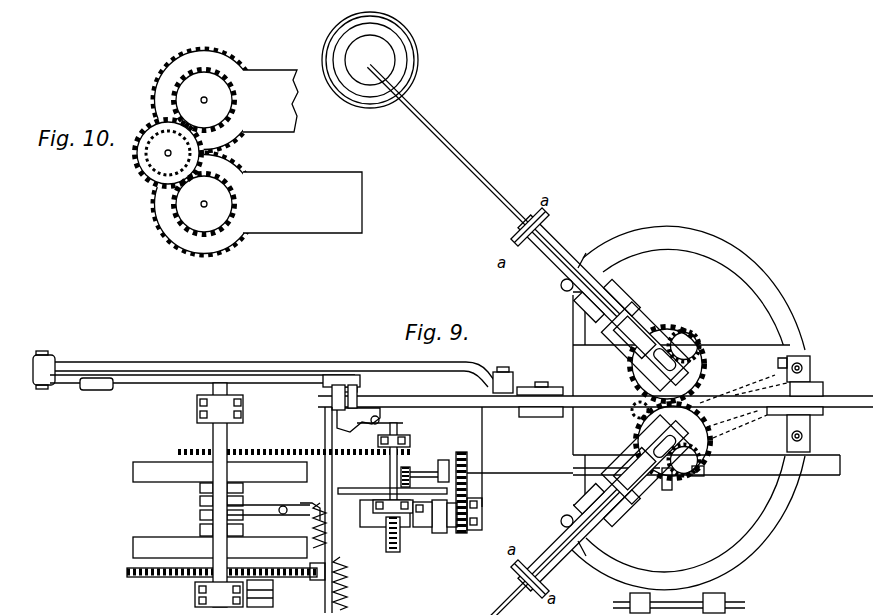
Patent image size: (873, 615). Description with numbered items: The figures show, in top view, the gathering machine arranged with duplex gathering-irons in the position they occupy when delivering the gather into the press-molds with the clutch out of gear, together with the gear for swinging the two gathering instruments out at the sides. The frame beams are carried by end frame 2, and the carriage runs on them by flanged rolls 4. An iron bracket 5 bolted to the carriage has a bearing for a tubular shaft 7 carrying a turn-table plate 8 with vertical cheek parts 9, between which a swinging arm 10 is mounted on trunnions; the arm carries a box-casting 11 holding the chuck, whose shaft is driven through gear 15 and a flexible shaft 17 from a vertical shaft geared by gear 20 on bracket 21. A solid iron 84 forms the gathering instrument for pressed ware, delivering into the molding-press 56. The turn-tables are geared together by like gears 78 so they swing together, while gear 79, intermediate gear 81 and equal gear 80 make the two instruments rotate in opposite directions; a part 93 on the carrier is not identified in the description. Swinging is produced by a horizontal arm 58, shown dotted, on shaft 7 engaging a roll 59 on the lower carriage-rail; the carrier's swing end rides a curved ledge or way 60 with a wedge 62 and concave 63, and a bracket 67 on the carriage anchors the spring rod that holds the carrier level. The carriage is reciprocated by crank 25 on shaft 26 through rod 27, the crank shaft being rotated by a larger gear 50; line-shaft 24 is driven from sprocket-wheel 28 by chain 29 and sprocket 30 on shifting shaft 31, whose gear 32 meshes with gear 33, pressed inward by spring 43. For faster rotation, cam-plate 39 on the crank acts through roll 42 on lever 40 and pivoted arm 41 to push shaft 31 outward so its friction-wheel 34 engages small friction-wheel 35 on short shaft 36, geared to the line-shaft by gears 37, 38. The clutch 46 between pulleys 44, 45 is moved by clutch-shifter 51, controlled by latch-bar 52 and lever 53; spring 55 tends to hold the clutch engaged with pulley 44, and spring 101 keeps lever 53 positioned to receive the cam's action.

In FIG. 9, the end frame 2 is at (210, 409).
In FIG. 9, the flanged rolls 4 is at (532, 386).
In FIG. 9, the iron bracket 5 is at (706, 398).
In FIG. 9, the tubular shaft 7 is at (603, 391).
In FIG. 10, the turn-table plate 8 is at (302, 151).
In FIG. 9, the turn-table plate 8 is at (708, 344).
In FIG. 9, the vertical cheek parts 9 is at (636, 318).
In FIG. 9, the arm 10 is at (565, 244).
In FIG. 9, the box-casting 11 is at (650, 325).
In FIG. 9, the gear 15 is at (692, 498).
In FIG. 9, the flexible shaft 17 is at (706, 485).
In FIG. 9, the gear 20 is at (667, 492).
In FIG. 9, the bracket 21 is at (704, 478).
In FIG. 9, the line-shaft 24 is at (535, 473).
In FIG. 9, the crank cam-lever 25 is at (252, 374).
In FIG. 9, the shaft 26 is at (213, 470).
In FIG. 9, the rod 27 is at (148, 362).
In FIG. 9, the sprocket-wheel 28 is at (195, 442).
In FIG. 9, the chain 29 is at (262, 449).
In FIG. 9, the sprocket 30 is at (412, 458).
In FIG. 9, the shifting shaft 31 is at (412, 440).
In FIG. 9, the gear 32 is at (400, 485).
In FIG. 9, the gear 33 is at (412, 470).
In FIG. 9, the friction-wheel 34 is at (330, 490).
In FIG. 9, the small friction-wheel 35 is at (438, 534).
In FIG. 9, the short shaft 36 is at (452, 528).
In FIG. 9, the gear 37 is at (478, 530).
In FIG. 9, the gear 38 is at (468, 456).
In FIG. 9, the cam-formed plate 39 is at (95, 391).
In FIG. 9, the lever 40 is at (362, 400).
In FIG. 9, the pivoted arm 41 is at (395, 421).
In FIG. 9, the roll 42 is at (352, 394).
In FIG. 9, the spring 43 is at (401, 540).
In FIG. 9, the pulley 44 is at (220, 472).
In FIG. 9, the pulley 45 is at (220, 547).
In FIG. 9, the clutch 46 is at (199, 505).
In FIG. 9, the larger gear 50 is at (172, 578).
In FIG. 9, the clutch-shifter 51 is at (258, 500).
In FIG. 9, the latch-bar 52 is at (303, 501).
In FIG. 9, the lever 53 is at (336, 418).
In FIG. 9, the spring 55 is at (342, 390).
In FIG. 9, the molding-press 56 is at (370, 60).
In FIG. 9, the horizontal arm 58 is at (750, 383).
In FIG. 9, the roll 59 is at (774, 356).
In FIG. 9, the ledge or way 60 is at (740, 270).
In FIG. 9, the wedge 62 is at (610, 270).
In FIG. 9, the concave 63 is at (562, 291).
In FIG. 9, the bracket 67 is at (811, 370).
In FIG. 10, the like gears 78 is at (198, 49).
In FIG. 9, the like gears 78 is at (704, 385).
In FIG. 10, the gear 79 is at (204, 204).
In FIG. 9, the gear 79 is at (702, 441).
In FIG. 10, the equal gear 80 is at (204, 100).
In FIG. 9, the equal gear 80 is at (703, 376).
In FIG. 10, the intermediate gear 81 is at (168, 153).
In FIG. 9, the intermediate gear 81 is at (632, 413).
In FIG. 9, the solid iron 84 is at (493, 339).
In FIG. 9, the plate 93 is at (622, 300).
In FIG. 9, the spring 101 is at (348, 590).